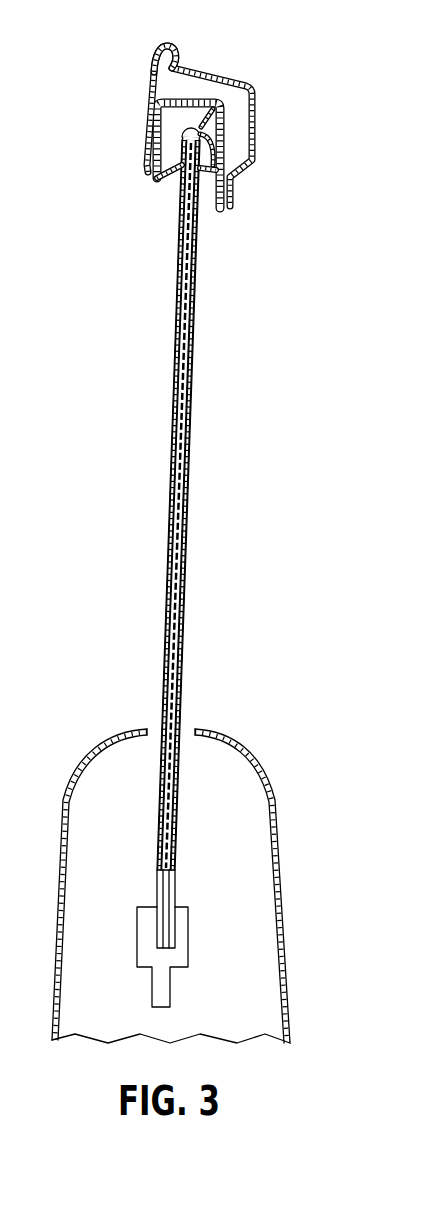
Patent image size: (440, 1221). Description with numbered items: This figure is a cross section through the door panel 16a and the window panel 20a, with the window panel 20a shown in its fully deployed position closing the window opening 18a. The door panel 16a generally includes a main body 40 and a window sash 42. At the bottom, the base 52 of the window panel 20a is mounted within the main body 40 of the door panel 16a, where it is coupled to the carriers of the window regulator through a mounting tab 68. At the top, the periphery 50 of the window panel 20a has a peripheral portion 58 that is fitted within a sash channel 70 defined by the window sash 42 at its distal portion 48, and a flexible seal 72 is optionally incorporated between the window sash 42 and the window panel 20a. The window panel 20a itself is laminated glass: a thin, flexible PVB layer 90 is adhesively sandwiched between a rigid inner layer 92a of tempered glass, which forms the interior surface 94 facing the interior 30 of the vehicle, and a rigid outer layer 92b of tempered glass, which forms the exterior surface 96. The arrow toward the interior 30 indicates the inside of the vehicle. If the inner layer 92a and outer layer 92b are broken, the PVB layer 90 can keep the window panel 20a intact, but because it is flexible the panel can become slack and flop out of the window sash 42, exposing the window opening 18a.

The door panel 16a is at (277, 800).
The main body 40 is at (282, 875).
The mounting tab 68 is at (188, 960).
The base 52 is at (173, 890).
The window opening 18a is at (190, 629).
The window panel 20a is at (180, 683).
The exterior surface 96 is at (178, 297).
The interior surface 94 is at (193, 320).
The rigid outer layer 92b is at (177, 352).
The rigid inner layer 92a is at (192, 373).
The PVB layer 90 is at (182, 400).
The interior 30 is at (222, 256).
The flexible seal 72 is at (158, 113).
The sash channel 70 is at (166, 133).
The periphery 50 is at (205, 105).
The peripheral portion 58 is at (255, 143).
The window sash 42 is at (118, 38).
The distal portion 48 is at (165, 43).